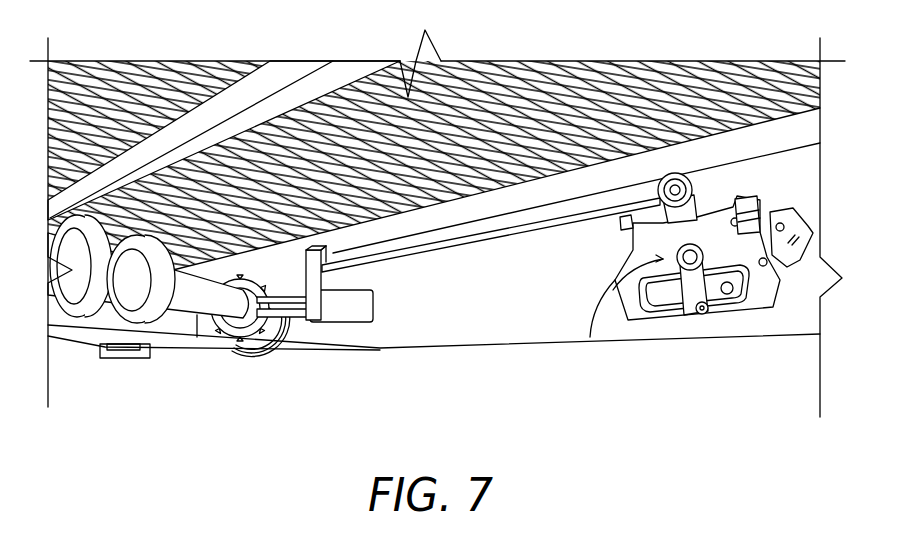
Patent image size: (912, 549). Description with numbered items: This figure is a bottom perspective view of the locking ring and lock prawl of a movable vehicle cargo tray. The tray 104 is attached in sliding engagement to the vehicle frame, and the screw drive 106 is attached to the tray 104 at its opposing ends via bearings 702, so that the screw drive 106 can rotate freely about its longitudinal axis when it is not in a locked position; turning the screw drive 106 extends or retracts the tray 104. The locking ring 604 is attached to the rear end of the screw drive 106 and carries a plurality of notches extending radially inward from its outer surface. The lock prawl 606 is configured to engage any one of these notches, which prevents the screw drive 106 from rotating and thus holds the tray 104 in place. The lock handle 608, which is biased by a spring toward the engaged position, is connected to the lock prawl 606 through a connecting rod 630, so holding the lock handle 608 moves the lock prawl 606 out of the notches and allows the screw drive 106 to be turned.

The tray 104 is at (540, 318).
The screw drive 106 is at (185, 303).
The locking ring 604 is at (222, 337).
The lock prawl 606 is at (258, 348).
The lock handle 608 is at (610, 318).
The connecting rod 630 is at (437, 243).
The bearings 702 is at (243, 352).